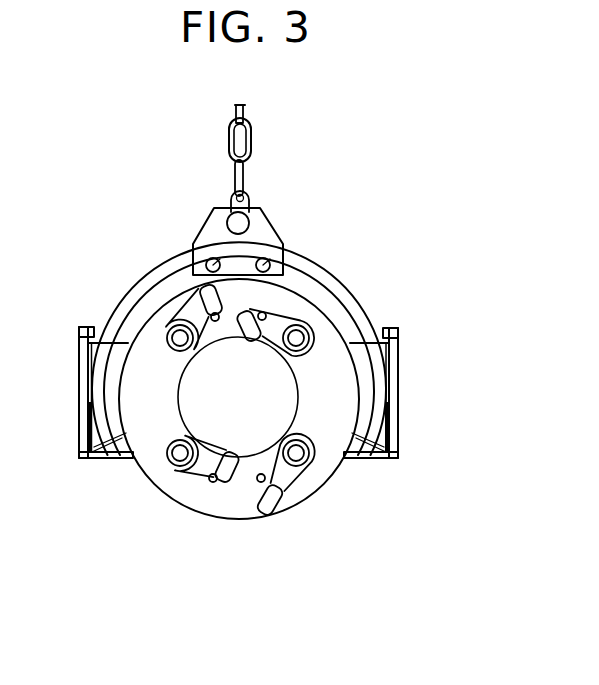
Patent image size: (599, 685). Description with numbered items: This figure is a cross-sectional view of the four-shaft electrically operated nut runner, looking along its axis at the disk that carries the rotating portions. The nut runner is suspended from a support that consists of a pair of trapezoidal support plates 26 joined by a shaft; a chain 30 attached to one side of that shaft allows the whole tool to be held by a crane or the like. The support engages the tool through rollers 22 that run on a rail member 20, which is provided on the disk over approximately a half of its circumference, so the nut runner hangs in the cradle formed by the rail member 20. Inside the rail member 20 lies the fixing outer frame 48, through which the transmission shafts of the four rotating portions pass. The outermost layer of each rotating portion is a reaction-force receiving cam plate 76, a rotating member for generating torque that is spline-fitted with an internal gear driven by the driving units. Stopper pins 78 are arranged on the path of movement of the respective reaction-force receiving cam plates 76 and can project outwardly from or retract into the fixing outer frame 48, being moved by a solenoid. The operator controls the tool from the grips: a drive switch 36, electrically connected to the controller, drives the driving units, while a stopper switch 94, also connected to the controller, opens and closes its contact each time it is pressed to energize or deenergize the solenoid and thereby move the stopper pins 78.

The rail member 20 is at (333, 274).
The rollers 22 is at (211, 259).
The trapezoidal support plates 26 is at (271, 226).
The chain 30 is at (251, 132).
The drive switch 36 is at (388, 330).
The fixing outer frame 48 is at (323, 330).
The reaction-force receiving cam plate 76 is at (187, 318).
The stopper pins 78 is at (204, 302).
The stopper switch 94 is at (82, 327).